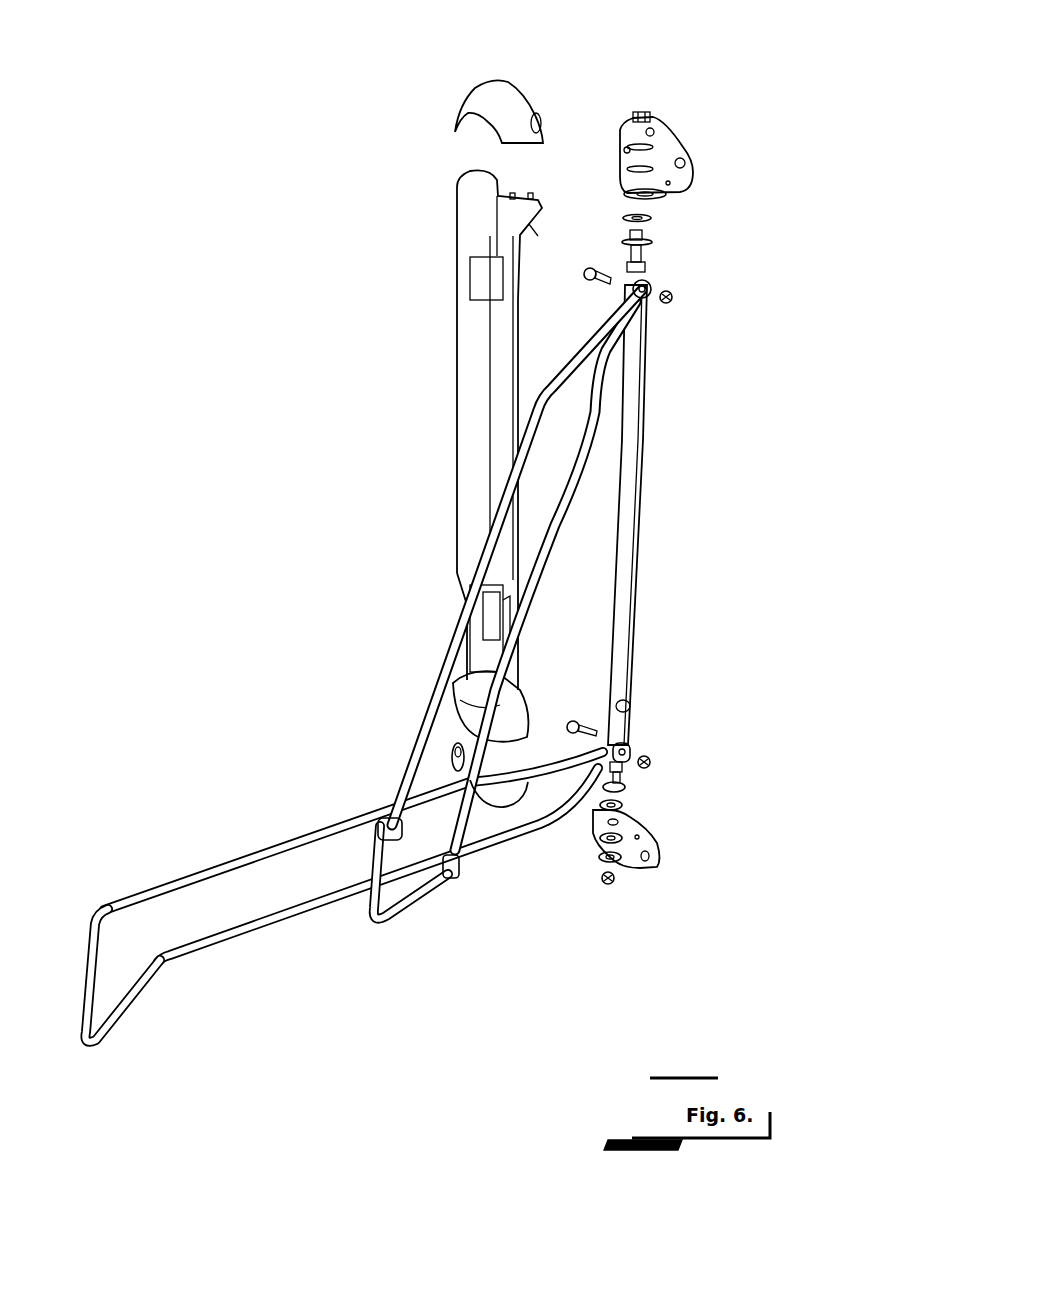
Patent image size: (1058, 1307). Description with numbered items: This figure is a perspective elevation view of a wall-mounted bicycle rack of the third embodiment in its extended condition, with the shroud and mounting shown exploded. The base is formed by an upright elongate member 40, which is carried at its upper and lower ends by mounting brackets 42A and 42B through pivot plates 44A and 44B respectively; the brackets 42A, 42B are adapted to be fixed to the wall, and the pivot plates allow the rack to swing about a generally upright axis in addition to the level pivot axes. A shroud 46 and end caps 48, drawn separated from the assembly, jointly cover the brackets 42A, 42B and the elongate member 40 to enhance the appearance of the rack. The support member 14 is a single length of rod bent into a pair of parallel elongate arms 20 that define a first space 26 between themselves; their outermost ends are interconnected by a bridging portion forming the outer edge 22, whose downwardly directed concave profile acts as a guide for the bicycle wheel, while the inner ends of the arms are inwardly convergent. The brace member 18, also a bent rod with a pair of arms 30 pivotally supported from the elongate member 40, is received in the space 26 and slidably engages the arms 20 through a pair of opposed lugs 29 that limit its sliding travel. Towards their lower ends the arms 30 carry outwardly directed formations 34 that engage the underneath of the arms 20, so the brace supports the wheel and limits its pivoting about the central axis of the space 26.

The support member 14 is at (226, 850).
The brace member 18 is at (503, 500).
The elongate arms 20 is at (157, 890).
The outer edge 22 is at (110, 1028).
The first space 26 is at (318, 866).
The lugs 29 is at (450, 845).
The arms 30 is at (511, 478).
The outwardly directed formations 34 is at (380, 920).
The elongate member 40 is at (630, 437).
The mounting bracket 42A is at (627, 130).
The mounting bracket 42B is at (657, 860).
The pivot plate 44A is at (660, 196).
The pivot plate 44B is at (603, 812).
The shroud 46 is at (457, 374).
The end caps 48 is at (455, 102).